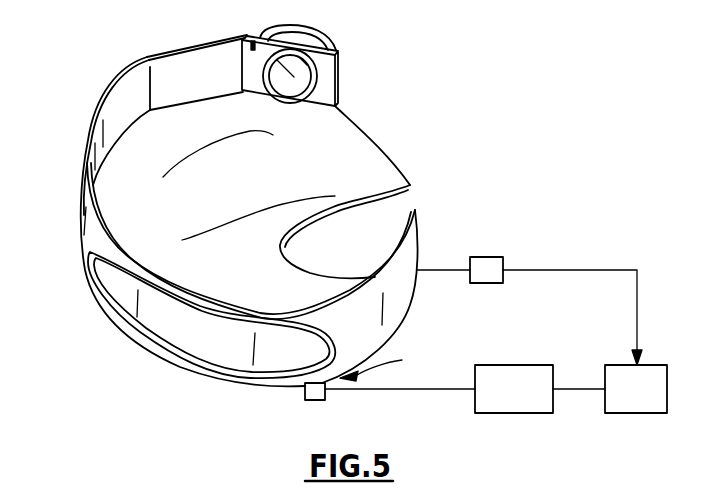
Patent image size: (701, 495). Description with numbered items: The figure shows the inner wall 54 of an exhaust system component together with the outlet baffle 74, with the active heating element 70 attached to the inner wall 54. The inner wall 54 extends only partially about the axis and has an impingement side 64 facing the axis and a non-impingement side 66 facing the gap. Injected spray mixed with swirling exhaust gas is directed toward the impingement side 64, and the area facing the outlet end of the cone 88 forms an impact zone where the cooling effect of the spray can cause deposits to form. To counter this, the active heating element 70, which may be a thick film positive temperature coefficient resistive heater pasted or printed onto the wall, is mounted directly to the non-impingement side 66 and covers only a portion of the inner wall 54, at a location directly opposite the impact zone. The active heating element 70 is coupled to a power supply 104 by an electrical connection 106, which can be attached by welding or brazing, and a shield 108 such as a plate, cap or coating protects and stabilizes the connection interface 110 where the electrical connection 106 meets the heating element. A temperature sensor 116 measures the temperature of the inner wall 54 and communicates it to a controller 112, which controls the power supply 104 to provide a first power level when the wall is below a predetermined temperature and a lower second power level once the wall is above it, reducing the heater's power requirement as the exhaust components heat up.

The inner wall 54 is at (87, 145).
The impingement side 64 is at (118, 112).
The non-impingement side 66 is at (420, 245).
The active heating element 70 is at (190, 345).
The outlet baffle 74 is at (347, 165).
The cone 88 is at (297, 80).
The power supply 104 is at (490, 404).
The electrical connection 106 is at (385, 389).
The shield 108 is at (312, 400).
The connection interface 110 is at (394, 365).
The controller 112 is at (612, 404).
The temperature sensor 116 is at (498, 257).